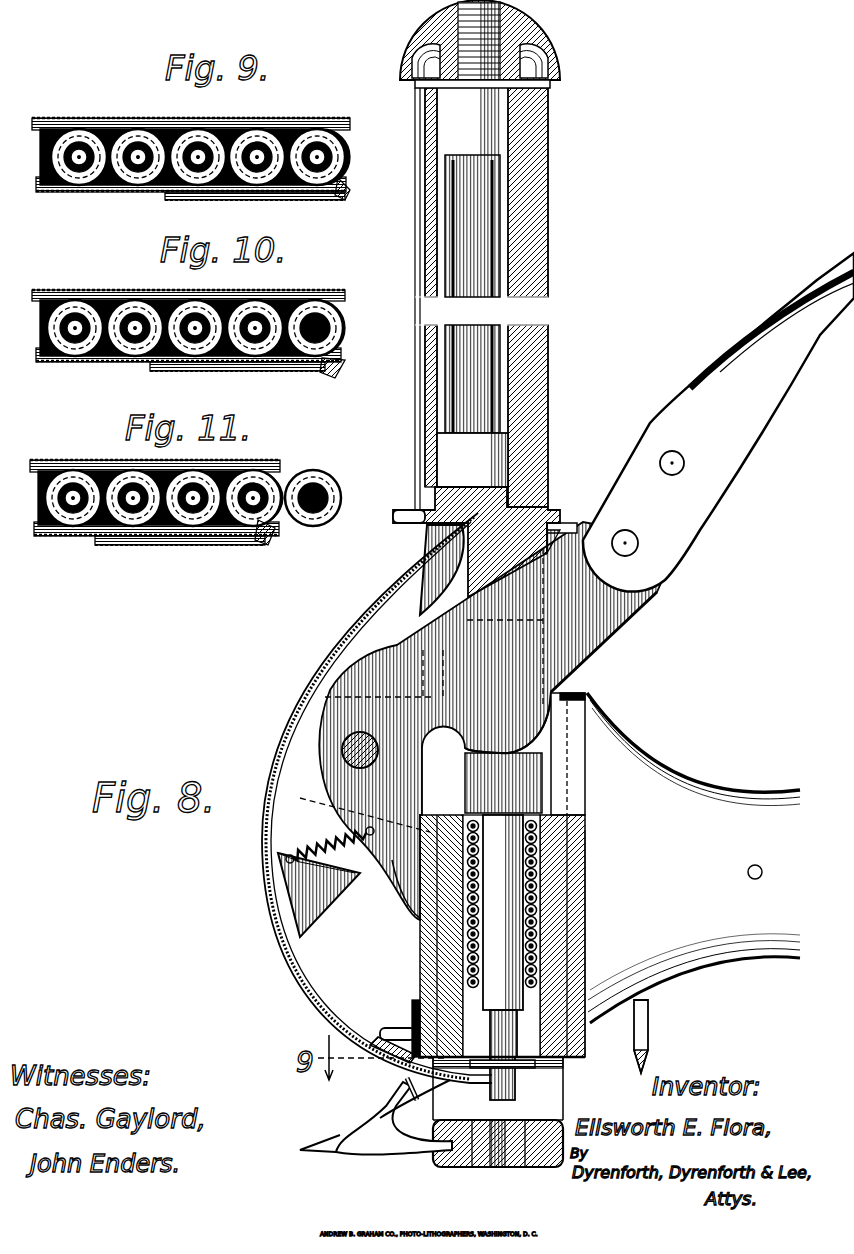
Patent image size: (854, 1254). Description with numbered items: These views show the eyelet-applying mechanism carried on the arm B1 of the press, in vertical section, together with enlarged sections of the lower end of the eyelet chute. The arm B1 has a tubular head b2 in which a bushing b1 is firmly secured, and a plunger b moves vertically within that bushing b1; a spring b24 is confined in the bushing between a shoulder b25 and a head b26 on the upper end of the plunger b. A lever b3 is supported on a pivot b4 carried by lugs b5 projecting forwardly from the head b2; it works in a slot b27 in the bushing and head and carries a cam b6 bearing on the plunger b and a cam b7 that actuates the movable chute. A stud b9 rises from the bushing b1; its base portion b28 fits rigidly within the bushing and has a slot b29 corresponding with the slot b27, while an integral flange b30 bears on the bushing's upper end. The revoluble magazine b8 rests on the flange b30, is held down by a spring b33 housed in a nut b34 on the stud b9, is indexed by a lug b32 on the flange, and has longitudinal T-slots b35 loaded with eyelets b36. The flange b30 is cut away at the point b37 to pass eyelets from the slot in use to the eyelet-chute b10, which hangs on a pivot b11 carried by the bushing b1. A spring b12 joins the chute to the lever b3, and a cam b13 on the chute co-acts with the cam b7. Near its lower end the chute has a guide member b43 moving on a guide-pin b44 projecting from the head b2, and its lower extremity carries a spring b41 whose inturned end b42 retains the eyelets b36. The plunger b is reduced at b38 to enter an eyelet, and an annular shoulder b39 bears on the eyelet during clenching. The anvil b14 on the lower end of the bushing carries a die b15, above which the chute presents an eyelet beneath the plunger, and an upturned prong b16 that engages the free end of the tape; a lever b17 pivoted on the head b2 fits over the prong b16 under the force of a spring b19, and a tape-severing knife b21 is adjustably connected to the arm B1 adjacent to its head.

In FIG. 9, the eyelet-chute b10 is at (128, 122).
In FIG. 10, the eyelet-chute b10 is at (95, 296).
In FIG. 11, the eyelet-chute b10 is at (60, 460).
In FIG. 8, the eyelet-chute b10 is at (322, 676).
In FIG. 9, the eyelets b36 is at (303, 130).
In FIG. 10, the eyelets b36 is at (303, 300).
In FIG. 11, the eyelets b36 is at (300, 478).
In FIG. 8, the eyelets b36 is at (485, 1092).
In FIG. 9, the spring b41 is at (300, 200).
In FIG. 10, the spring b41 is at (296, 372).
In FIG. 11, the spring b41 is at (212, 545).
In FIG. 9, the inturned end b42 is at (342, 195).
In FIG. 10, the inturned end b42 is at (333, 368).
In FIG. 11, the inturned end b42 is at (268, 540).
In FIG. 8, the nut b34 is at (548, 45).
In FIG. 8, the spring b33 is at (540, 72).
In FIG. 8, the stud b9 is at (492, 250).
In FIG. 8, the revoluble magazine b8 is at (550, 348).
In FIG. 8, the longitudinal T-slots b35 is at (418, 412).
In FIG. 8, the lug b32 is at (512, 492).
In FIG. 8, the flange b30 is at (536, 512).
In FIG. 8, the bushing b1 is at (565, 522).
In FIG. 8, the cut-away point b37 is at (400, 514).
In FIG. 8, the pivot b11 is at (435, 565).
In FIG. 8, the base portion b28 is at (540, 545).
In FIG. 8, the slot b29 is at (499, 721).
In FIG. 8, the lever b3 is at (660, 598).
In FIG. 8, the slot b27 is at (588, 702).
In FIG. 8, the tubular head b2 is at (598, 722).
In FIG. 8, the pivot b4 is at (345, 751).
In FIG. 8, the cam b6 is at (516, 748).
In FIG. 8, the lugs b5 is at (359, 810).
In FIG. 8, the spring b12 is at (332, 848).
In FIG. 8, the head b26 is at (572, 800).
In FIG. 8, the arm B1 is at (693, 858).
In FIG. 8, the plunger b is at (503, 912).
In FIG. 8, the spring b24 is at (548, 890).
In FIG. 8, the shoulder b25 is at (580, 962).
In FIG. 8, the cam b13 is at (340, 895).
In FIG. 8, the cam b7 is at (392, 898).
In FIG. 8, the guide member b43 is at (400, 1035).
In FIG. 8, the annular shoulder b39 is at (430, 1000).
In FIG. 8, the guide-pin b44 is at (392, 1032).
In FIG. 8, the reduced section b38 is at (552, 1050).
In FIG. 8, the tape-severing knife b21 is at (648, 1062).
In FIG. 8, the spring b19 is at (405, 1085).
In FIG. 8, the lever b17 is at (380, 1118).
In FIG. 8, the prong b16 is at (410, 1150).
In FIG. 8, the die b15 is at (492, 1168).
In FIG. 8, the anvil b14 is at (540, 1168).